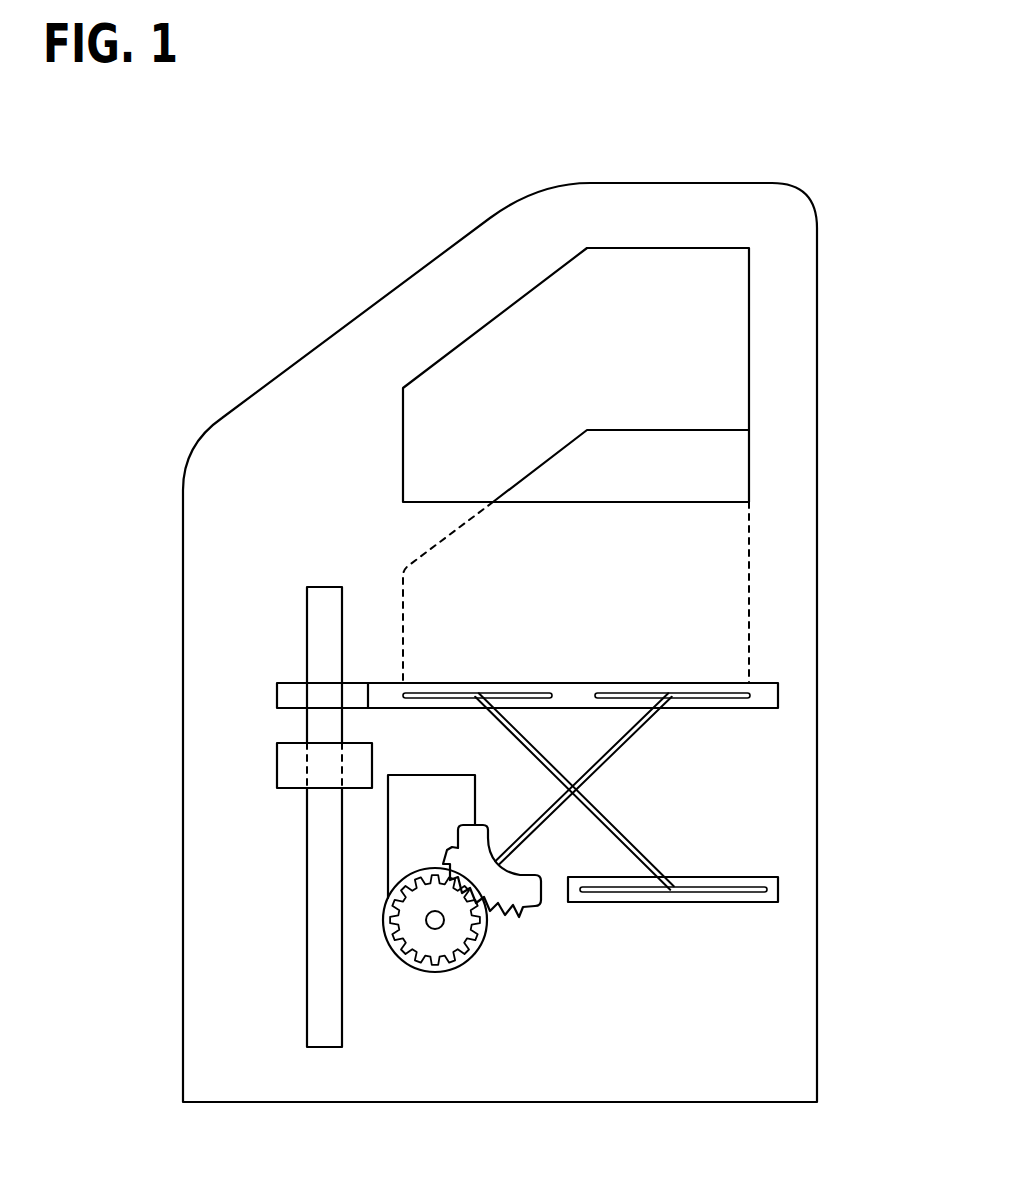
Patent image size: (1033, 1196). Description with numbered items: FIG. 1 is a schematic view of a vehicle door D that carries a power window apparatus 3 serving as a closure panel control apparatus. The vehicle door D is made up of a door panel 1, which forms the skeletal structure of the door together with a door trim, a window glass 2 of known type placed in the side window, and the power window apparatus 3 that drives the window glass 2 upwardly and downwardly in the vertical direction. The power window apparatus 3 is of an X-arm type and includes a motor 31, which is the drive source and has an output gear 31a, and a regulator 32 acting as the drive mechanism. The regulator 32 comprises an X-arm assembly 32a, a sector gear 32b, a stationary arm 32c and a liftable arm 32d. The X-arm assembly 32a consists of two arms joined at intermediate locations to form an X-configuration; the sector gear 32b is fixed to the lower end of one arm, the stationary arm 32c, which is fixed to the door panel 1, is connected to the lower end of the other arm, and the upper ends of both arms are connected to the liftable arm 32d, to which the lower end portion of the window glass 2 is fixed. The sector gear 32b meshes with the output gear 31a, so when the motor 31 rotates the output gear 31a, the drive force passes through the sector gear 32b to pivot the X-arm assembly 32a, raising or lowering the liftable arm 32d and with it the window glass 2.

The door panel 1 is at (355, 332).
The vehicle door D is at (596, 163).
The window glass 2 is at (717, 478).
The power window apparatus 3 is at (800, 670).
The motor 31 is at (375, 837).
The output gear 31a is at (405, 950).
The regulator 32 is at (588, 668).
The X-arm assembly 32a is at (613, 755).
The sector gear 32b is at (487, 943).
The stationary arm 32c is at (778, 887).
The liftable arm 32d is at (465, 683).